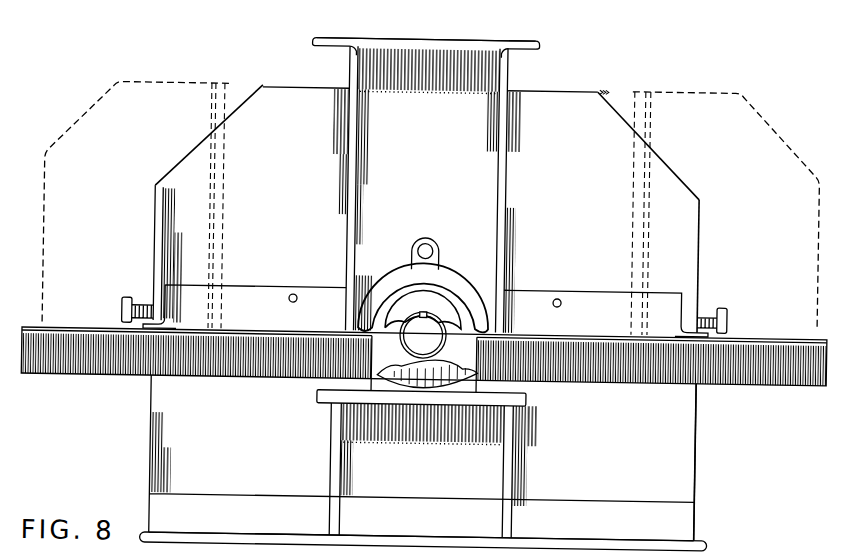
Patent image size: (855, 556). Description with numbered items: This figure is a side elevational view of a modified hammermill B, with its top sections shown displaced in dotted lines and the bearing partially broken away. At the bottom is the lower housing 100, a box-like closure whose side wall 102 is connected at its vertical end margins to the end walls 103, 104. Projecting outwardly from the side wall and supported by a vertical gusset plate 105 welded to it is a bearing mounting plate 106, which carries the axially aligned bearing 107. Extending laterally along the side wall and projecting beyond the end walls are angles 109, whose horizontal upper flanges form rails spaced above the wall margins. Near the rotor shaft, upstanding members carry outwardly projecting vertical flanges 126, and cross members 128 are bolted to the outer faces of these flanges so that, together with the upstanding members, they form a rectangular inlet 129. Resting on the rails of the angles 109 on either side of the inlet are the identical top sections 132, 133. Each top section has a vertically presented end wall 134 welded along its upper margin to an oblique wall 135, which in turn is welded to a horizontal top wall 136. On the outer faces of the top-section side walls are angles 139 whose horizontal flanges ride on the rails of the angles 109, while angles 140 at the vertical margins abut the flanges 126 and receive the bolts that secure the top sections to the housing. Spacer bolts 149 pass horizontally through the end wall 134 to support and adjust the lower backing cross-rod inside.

The hammermill B is at (189, 65).
The lower housing 100 is at (701, 492).
The side wall 102 is at (155, 414).
The end wall 103 is at (152, 451).
The end wall 104 is at (699, 465).
The vertical gusset plate 105 is at (332, 445).
The bearing mounting plate 106 is at (316, 390).
The bearing 107 is at (487, 310).
The angle 109 is at (120, 374).
The vertical flange 126 is at (495, 178).
The cross member 128 is at (632, 82).
The inlet 129 is at (465, 33).
The top section 132 is at (196, 153).
The top section 133 is at (669, 164).
The end wall 134 is at (160, 216).
The oblique wall 135 is at (648, 140).
The horizontal top wall 136 is at (318, 80).
The angle 139 is at (311, 282).
The angle 140 is at (345, 217).
The spacer bolt 149 is at (120, 302).